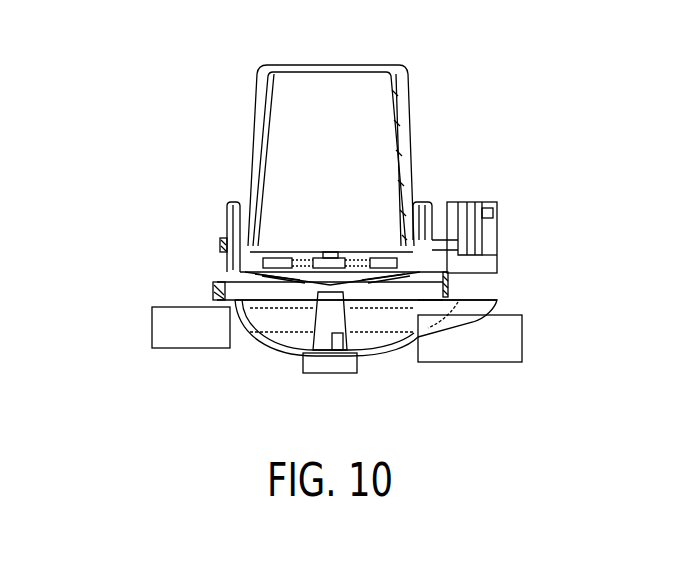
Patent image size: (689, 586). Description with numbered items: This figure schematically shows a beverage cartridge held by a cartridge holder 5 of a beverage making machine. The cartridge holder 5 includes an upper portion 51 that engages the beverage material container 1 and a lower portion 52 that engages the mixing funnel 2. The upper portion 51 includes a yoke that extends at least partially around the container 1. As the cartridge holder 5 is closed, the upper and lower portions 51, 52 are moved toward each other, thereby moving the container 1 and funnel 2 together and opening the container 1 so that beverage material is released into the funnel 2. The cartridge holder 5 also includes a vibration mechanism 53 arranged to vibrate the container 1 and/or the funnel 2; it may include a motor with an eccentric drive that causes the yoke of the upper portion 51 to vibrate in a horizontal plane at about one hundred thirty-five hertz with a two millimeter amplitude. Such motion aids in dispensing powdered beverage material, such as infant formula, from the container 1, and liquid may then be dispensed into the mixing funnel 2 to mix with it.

The beverage material container 1 is at (410, 108).
The mixing funnel 2 is at (378, 357).
The cartridge holder 5 is at (122, 292).
The upper portion 51 is at (240, 238).
The lower portion 52 is at (178, 348).
The vibration mechanism 53 is at (490, 202).